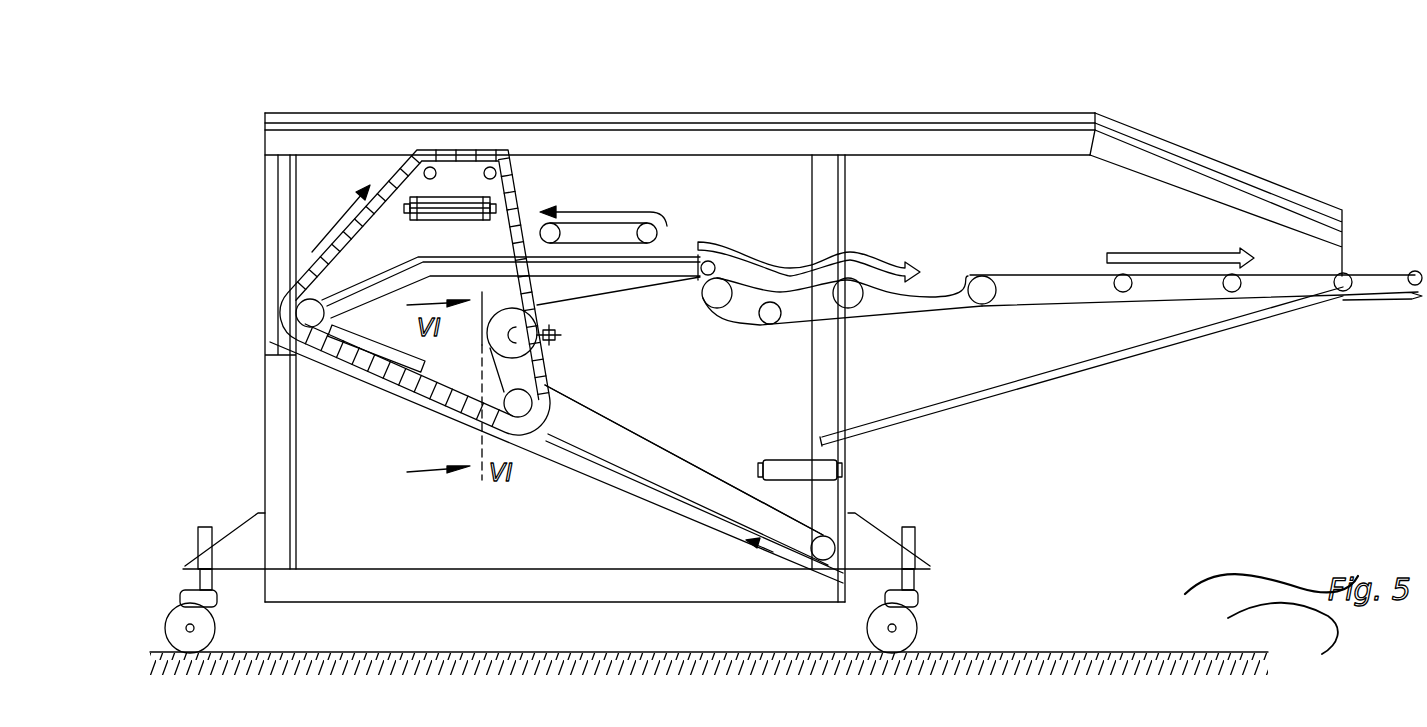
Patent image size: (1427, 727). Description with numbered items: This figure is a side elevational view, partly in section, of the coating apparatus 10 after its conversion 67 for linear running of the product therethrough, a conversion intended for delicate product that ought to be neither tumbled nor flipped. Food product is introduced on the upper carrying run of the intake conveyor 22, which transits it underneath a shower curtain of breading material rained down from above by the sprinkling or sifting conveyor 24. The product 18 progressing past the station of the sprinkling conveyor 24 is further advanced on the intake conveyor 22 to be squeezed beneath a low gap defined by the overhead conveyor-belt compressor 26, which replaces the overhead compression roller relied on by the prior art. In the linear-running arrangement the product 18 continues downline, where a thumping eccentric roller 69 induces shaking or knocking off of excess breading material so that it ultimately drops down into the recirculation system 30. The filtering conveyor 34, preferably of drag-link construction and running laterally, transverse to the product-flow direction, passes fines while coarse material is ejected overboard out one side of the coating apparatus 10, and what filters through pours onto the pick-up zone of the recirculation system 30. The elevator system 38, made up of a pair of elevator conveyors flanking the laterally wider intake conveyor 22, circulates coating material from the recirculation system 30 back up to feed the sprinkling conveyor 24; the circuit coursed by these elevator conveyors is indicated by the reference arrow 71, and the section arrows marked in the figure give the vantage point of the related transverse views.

The coating apparatus 10 is at (196, 84).
The product 18 is at (772, 270).
The intake conveyor 22 is at (343, 280).
The sprinkling conveyor 24 is at (483, 222).
The overhead conveyor-belt compressor 26 is at (672, 228).
The recirculation system 30 is at (642, 408).
The filtering conveyor 34 is at (786, 458).
The elevator system 38 is at (540, 357).
The conversion 67 is at (1049, 272).
The thumping eccentric roller 69 is at (858, 305).
The reference arrow 71 is at (340, 228).